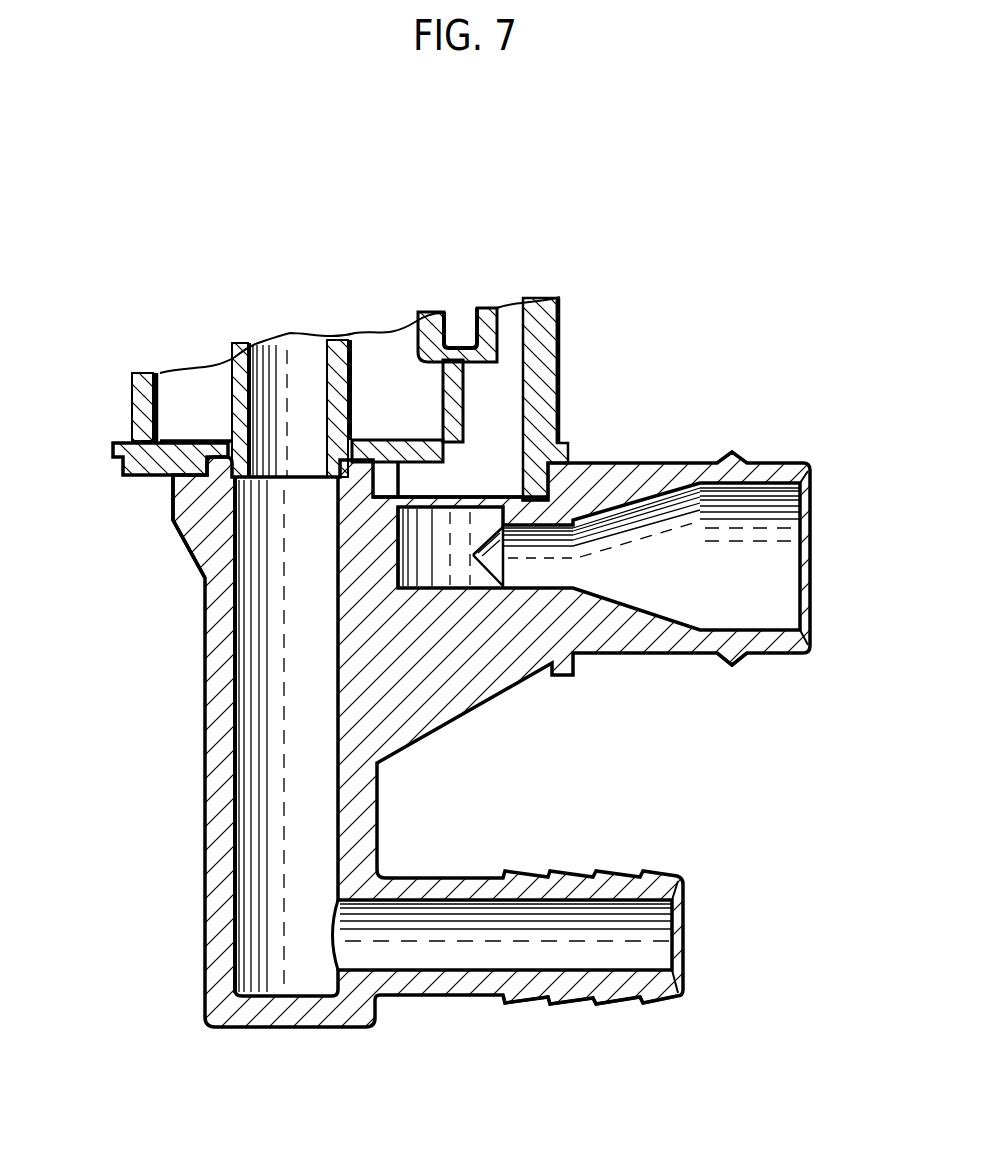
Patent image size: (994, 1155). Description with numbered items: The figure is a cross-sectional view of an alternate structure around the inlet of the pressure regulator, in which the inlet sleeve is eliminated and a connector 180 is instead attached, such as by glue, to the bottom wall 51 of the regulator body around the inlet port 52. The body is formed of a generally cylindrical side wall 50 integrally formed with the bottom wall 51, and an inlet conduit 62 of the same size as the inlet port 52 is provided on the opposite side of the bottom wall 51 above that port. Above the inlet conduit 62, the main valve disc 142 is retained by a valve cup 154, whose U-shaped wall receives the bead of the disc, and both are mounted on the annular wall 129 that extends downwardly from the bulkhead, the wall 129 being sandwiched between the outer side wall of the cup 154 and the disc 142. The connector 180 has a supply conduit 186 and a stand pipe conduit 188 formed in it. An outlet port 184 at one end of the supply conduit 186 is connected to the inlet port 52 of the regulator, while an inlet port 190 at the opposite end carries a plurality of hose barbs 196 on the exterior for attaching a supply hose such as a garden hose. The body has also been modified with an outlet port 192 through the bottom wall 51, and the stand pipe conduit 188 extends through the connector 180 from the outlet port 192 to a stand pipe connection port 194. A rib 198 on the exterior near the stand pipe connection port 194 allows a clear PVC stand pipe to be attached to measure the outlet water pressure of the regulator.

The side wall 50 is at (547, 327).
The bottom wall 51 is at (433, 441).
The inlet port 52 is at (262, 414).
The inlet conduit 62 is at (360, 333).
The annular wall 129 is at (472, 318).
The main valve disc 142 is at (448, 312).
The valve cup 154 is at (480, 375).
The connector 180 is at (188, 716).
The outlet port 184 is at (233, 505).
The supply conduit 186 is at (220, 884).
The stand pipe conduit 188 is at (667, 462).
The inlet port 190 is at (690, 905).
The outlet port 192 is at (516, 448).
The stand pipe connection port 194 is at (815, 522).
The hose barbs 196 is at (598, 1002).
The rib 198 is at (740, 665).